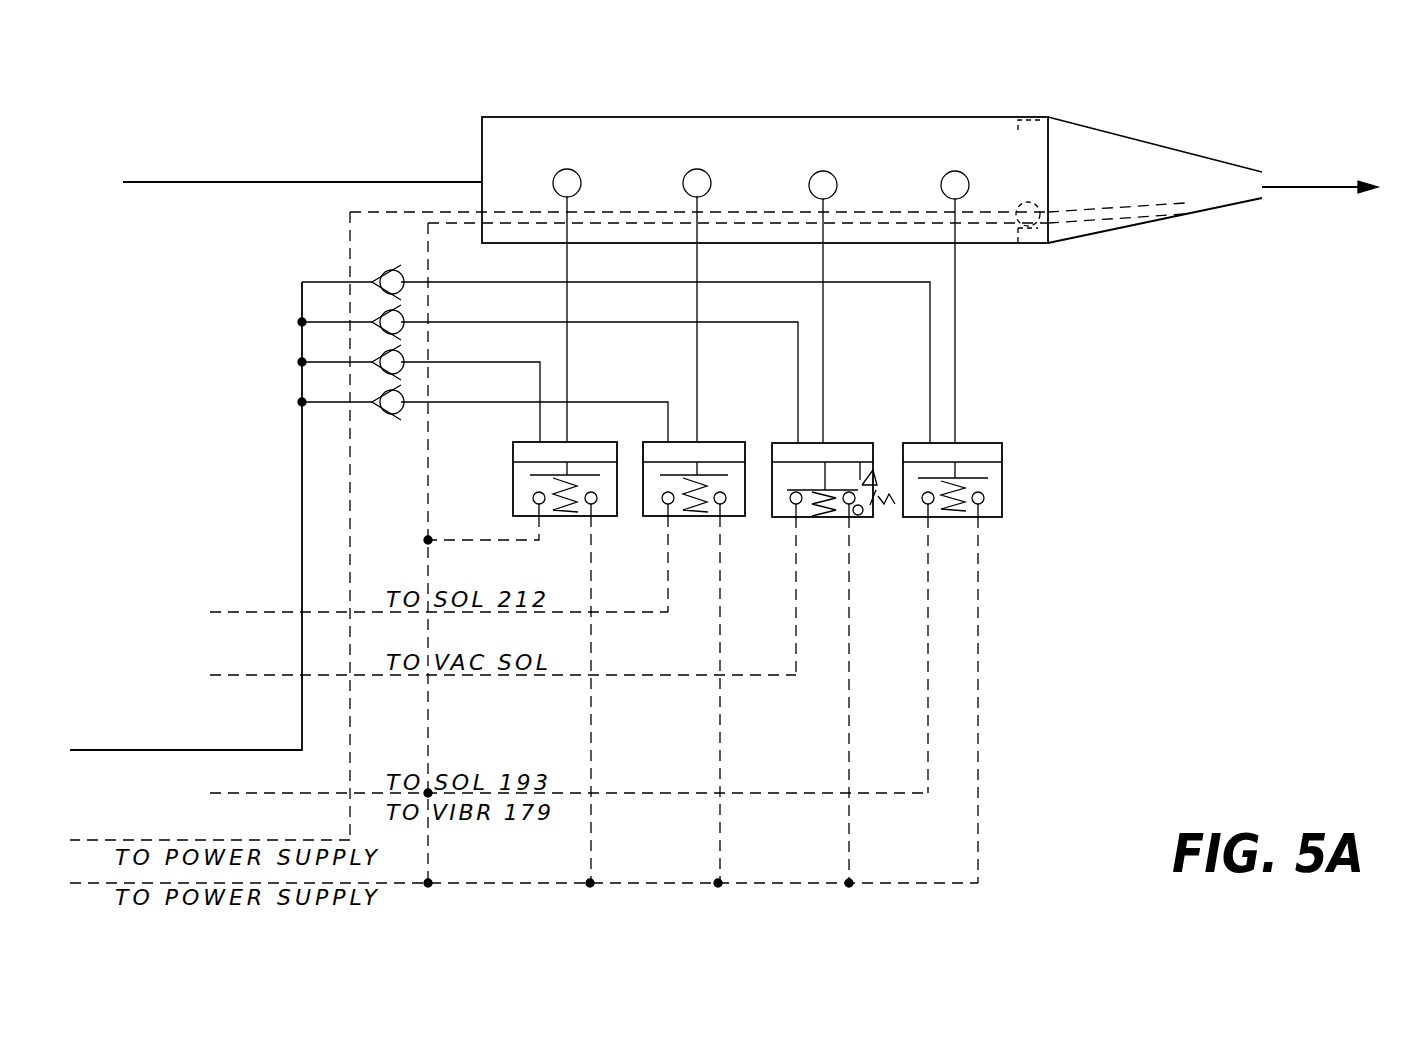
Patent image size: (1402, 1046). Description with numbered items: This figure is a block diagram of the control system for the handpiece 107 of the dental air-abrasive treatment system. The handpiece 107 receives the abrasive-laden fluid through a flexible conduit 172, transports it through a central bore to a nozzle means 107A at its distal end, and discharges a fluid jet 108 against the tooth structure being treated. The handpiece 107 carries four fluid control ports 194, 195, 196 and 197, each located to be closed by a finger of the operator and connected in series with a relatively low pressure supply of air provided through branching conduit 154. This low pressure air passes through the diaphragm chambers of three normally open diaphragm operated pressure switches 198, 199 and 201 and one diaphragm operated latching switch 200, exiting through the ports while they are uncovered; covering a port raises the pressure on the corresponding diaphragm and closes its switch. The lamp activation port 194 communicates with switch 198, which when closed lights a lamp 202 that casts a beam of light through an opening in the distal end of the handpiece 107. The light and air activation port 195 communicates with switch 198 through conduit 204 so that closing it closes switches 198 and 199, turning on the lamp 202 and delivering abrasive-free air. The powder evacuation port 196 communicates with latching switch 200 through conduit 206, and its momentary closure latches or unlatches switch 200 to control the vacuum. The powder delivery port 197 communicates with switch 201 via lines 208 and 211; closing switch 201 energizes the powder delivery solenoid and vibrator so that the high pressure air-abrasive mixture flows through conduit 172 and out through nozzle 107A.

The handpiece 107 is at (527, 117).
The nozzle means 107A is at (1185, 152).
The fluid jet 108 is at (1318, 188).
The conduit 172 is at (240, 182).
The branching conduit 154 is at (302, 385).
The lamp activation port 194 is at (581, 183).
The light and air activation port 195 is at (711, 183).
The powder evacuation activator port 196 is at (837, 185).
The powder delivery activation port 197 is at (969, 185).
The normally open diaphragm operated pressure switch 198 is at (513, 452).
The normally open diaphragm operated pressure switch 199 is at (718, 442).
The diaphragm operated latching switch 200 is at (853, 443).
The normally open diaphragm operated pressure switch 201 is at (1004, 450).
The lamp 202 is at (1037, 245).
The conduit 204 is at (699, 262).
The conduit 206 is at (827, 262).
The line 208 is at (957, 282).
The line 211 is at (957, 395).